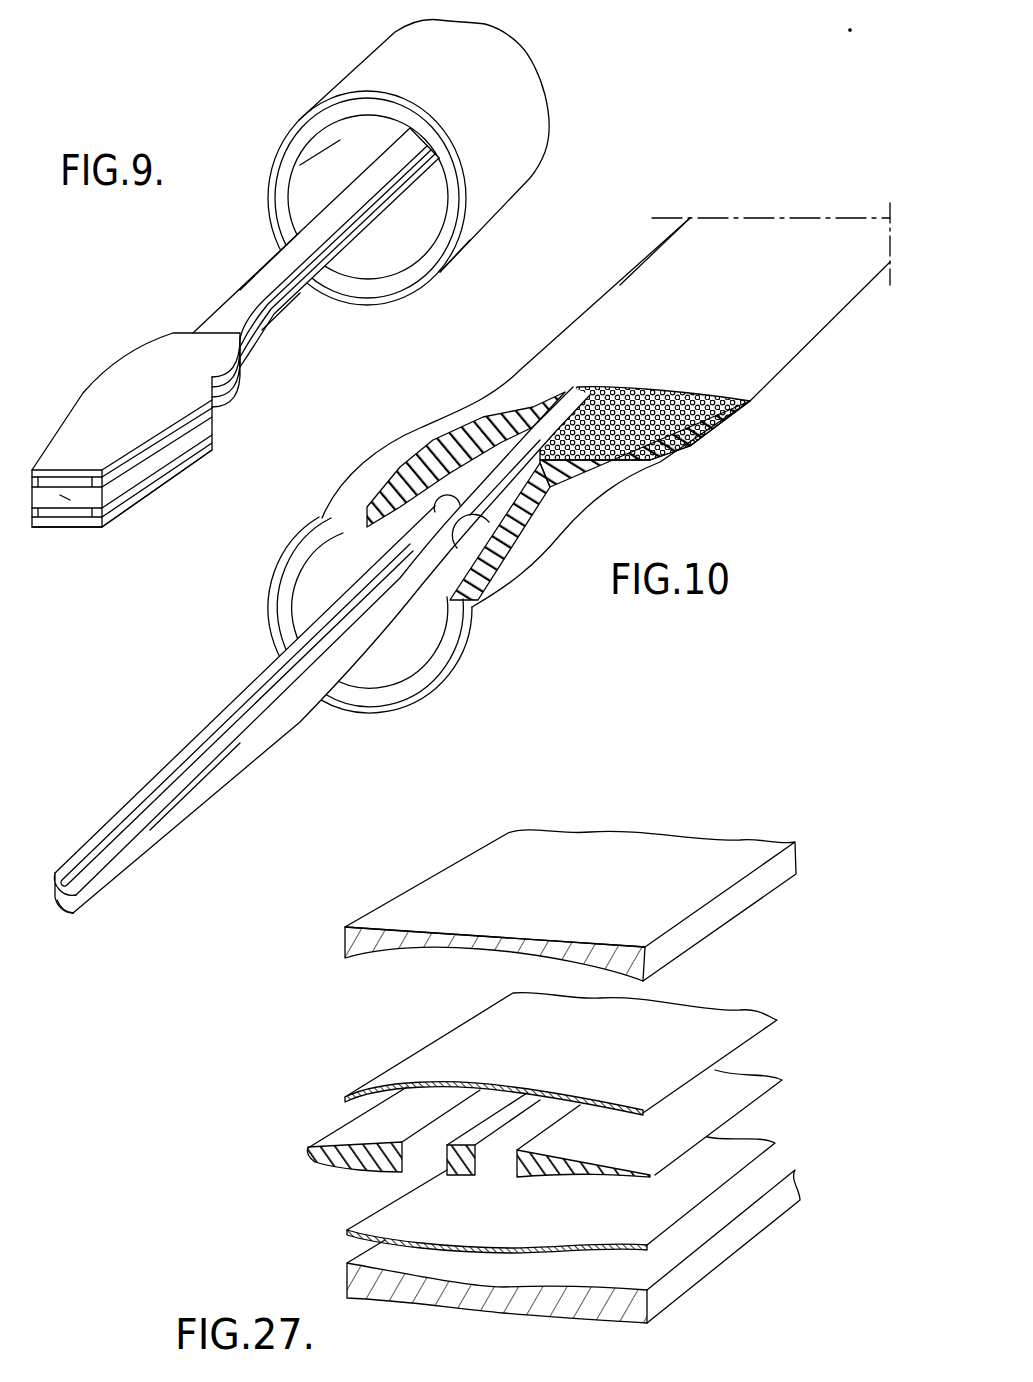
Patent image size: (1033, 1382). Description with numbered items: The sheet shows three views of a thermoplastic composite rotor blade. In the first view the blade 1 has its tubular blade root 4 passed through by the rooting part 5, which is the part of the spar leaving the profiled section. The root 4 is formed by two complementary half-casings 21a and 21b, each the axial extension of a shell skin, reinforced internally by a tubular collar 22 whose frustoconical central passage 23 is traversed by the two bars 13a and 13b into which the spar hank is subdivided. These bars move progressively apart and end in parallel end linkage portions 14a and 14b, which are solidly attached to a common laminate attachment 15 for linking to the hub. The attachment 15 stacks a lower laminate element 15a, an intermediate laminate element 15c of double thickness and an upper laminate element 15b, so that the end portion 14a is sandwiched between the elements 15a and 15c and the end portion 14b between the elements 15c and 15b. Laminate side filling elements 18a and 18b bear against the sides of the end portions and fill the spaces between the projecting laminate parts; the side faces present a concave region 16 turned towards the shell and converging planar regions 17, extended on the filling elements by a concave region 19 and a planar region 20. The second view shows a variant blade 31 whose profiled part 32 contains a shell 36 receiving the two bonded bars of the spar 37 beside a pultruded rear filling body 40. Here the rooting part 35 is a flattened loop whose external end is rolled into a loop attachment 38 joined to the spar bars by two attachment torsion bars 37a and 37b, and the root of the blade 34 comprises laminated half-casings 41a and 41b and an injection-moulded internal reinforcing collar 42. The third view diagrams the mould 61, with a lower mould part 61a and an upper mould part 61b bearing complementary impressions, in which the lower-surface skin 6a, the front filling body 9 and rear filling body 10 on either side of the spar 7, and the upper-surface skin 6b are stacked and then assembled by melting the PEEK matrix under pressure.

In FIG. 9, the blade 1 is at (318, 72).
In FIG. 9, the blade root 4 is at (392, 302).
In FIG. 9, the rooting part 5 is at (262, 253).
In FIG. 9, the lower bar 13a is at (276, 318).
In FIG. 9, the upper bar 13b is at (263, 278).
In FIG. 9, the end linkage portion of lower bar 14a is at (77, 516).
In FIG. 9, the end linkage portion of upper bar 14b is at (55, 520).
In FIG. 9, the laminate attachment 15 is at (110, 376).
In FIG. 9, the lower laminate element 15a is at (160, 493).
In FIG. 9, the upper laminate element 15b is at (105, 399).
In FIG. 9, the intermediate laminate element 15c is at (65, 500).
In FIG. 9, the concave region 16 is at (153, 350).
In FIG. 9, the planar region 17 is at (214, 441).
In FIG. 9, the laminate side filling element 18a is at (96, 513).
In FIG. 9, the laminate side filling element 18b is at (92, 479).
In FIG. 9, the concave region 19 is at (228, 367).
In FIG. 9, the planar region 20 is at (186, 439).
In FIG. 9, the half-casing 21a is at (474, 226).
In FIG. 9, the half-casing 21b is at (316, 106).
In FIG. 9, the tubular collar 22 is at (355, 283).
In FIG. 9, the central passage 23 is at (313, 163).
In FIG. 10, the blade 31 is at (566, 310).
In FIG. 10, the profiled part 32 is at (641, 256).
In FIG. 10, the root of the blade 34 is at (267, 596).
In FIG. 10, the rooting part 35 is at (201, 727).
In FIG. 10, the shell 36 is at (741, 236).
In FIG. 10, the spar 37 is at (510, 477).
In FIG. 10, the attachment torsion bar 37a is at (174, 820).
In FIG. 10, the attachment torsion bar 37b is at (136, 800).
In FIG. 10, the loop attachment 38 is at (75, 899).
In FIG. 10, the rear filling body 40 is at (664, 462).
In FIG. 10, the half-casing 41a is at (480, 605).
In FIG. 10, the half-casing 41b is at (369, 488).
In FIG. 10, the internal reinforcing collar 42 is at (433, 448).
In FIG. 27, the mould 61 is at (282, 1163).
In FIG. 27, the lower mould part 61a is at (392, 1290).
In FIG. 27, the upper mould part 61b is at (349, 952).
In FIG. 27, the lower-surface skin 6a is at (383, 1227).
In FIG. 27, the upper-surface skin 6b is at (389, 1072).
In FIG. 27, the spar 7 is at (447, 1172).
In FIG. 27, the front filling body 9 is at (358, 1158).
In FIG. 27, the rear filling body 10 is at (587, 1172).